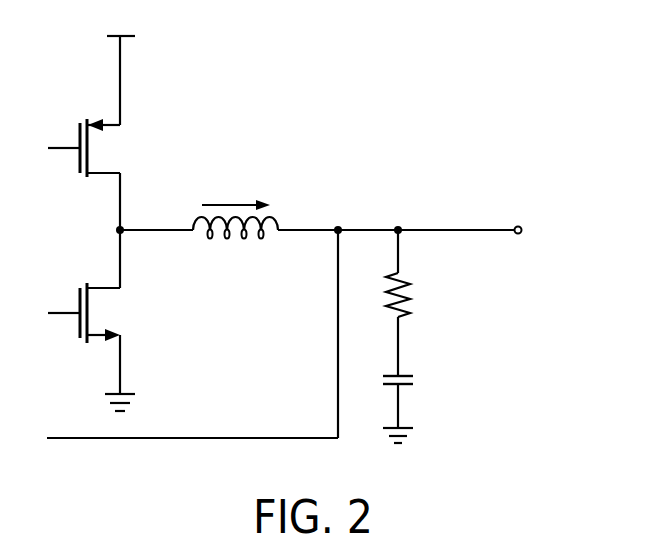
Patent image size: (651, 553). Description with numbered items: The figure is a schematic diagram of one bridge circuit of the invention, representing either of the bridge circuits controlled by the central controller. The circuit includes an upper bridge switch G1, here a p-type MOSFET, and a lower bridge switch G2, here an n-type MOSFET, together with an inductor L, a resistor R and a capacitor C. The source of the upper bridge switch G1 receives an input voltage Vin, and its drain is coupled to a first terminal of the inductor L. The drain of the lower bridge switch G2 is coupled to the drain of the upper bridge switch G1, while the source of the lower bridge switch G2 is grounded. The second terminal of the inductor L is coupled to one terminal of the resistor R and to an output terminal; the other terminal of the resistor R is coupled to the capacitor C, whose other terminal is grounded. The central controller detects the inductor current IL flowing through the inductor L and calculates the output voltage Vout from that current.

The upper bridge switch G1 is at (106, 174).
The lower bridge switch G2 is at (105, 320).
The inductor L is at (235, 246).
The inductor current IL is at (236, 189).
The resistor R is at (410, 303).
The capacitor C is at (408, 406).
The input voltage Vin is at (141, 71).
The output voltage Vout is at (546, 232).